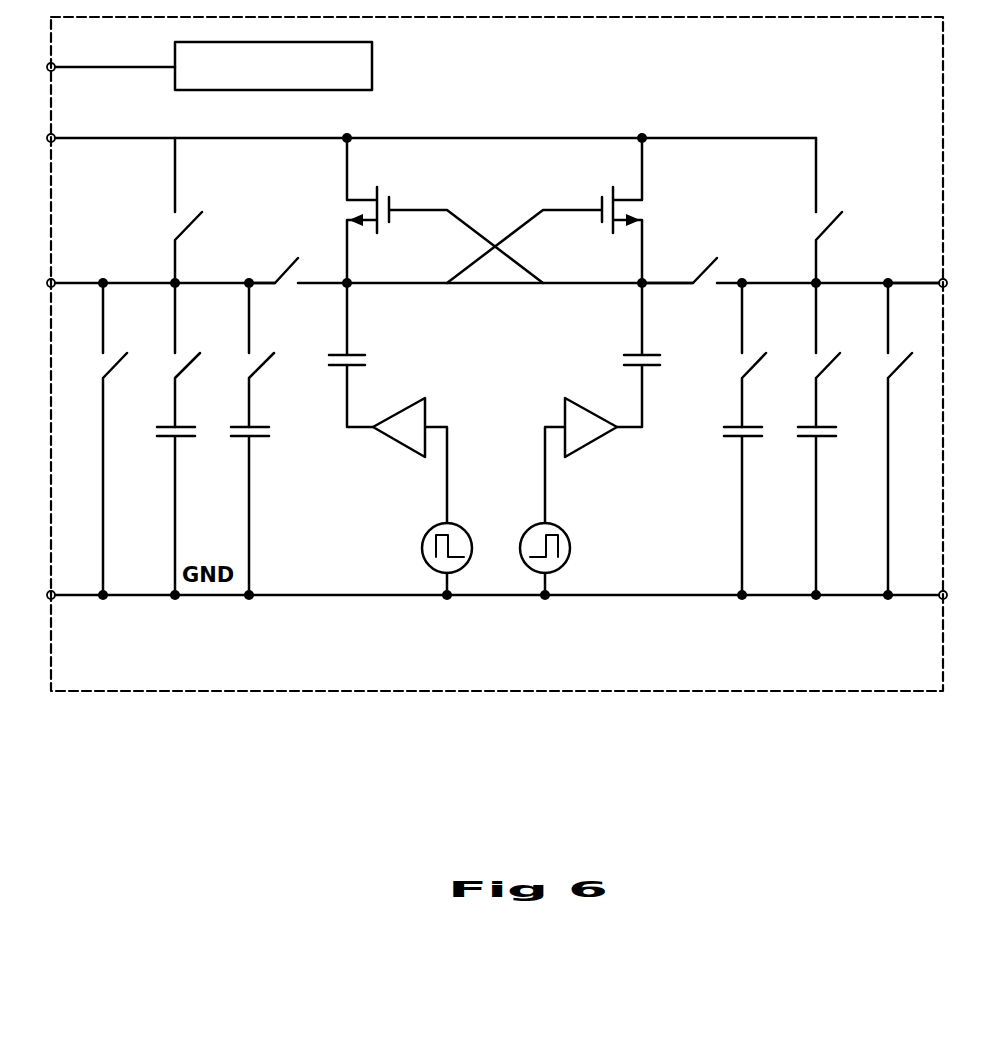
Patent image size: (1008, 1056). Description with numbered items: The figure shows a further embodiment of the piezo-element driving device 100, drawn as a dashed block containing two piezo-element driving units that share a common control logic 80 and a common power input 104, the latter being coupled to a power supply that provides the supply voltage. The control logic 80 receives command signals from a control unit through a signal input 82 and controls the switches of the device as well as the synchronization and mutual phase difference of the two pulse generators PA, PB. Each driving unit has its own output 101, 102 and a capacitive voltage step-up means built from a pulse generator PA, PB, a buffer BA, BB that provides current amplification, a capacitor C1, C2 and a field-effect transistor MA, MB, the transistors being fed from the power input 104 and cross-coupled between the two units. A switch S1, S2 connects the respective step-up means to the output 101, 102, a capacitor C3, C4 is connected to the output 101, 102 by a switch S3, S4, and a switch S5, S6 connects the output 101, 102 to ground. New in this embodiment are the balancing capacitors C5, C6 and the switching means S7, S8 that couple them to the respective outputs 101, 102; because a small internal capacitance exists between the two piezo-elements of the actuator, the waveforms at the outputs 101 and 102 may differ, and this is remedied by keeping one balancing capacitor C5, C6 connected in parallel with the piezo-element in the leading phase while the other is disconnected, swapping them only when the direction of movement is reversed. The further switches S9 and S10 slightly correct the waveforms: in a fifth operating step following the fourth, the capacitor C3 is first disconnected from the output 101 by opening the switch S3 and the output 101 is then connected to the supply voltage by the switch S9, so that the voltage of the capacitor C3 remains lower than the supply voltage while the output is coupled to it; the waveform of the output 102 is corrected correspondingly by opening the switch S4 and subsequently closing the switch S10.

The piezo-element driving device 100 is at (747, 691).
The control logic 80 is at (372, 62).
The signal input 82 is at (55, 63).
The power input 104 is at (55, 134).
The output 102 is at (55, 279).
The output 101 is at (939, 279).
The switch S1 is at (700, 268).
The switch S2 is at (296, 268).
The switch S3 is at (834, 355).
The switch S4 is at (198, 355).
The switch S5 is at (908, 439).
The switch S6 is at (123, 439).
The switching means S7 is at (760, 355).
The switching means S8 is at (272, 355).
The switch S9 is at (836, 210).
The switch S10 is at (202, 210).
The capacitor C1 is at (662, 355).
The capacitor C2 is at (373, 355).
The capacitor C3 is at (827, 511).
The capacitor C4 is at (187, 511).
The balancing capacitor C5 is at (753, 511).
The balancing capacitor C6 is at (261, 511).
The field-effect transistor MA is at (572, 210).
The field-effect transistor MB is at (421, 210).
The buffer BA is at (581, 460).
The buffer BB is at (410, 460).
The pulse generator PA is at (566, 559).
The pulse generator PB is at (425, 559).